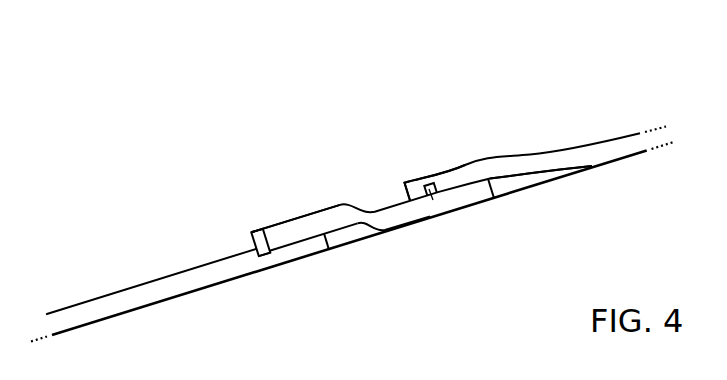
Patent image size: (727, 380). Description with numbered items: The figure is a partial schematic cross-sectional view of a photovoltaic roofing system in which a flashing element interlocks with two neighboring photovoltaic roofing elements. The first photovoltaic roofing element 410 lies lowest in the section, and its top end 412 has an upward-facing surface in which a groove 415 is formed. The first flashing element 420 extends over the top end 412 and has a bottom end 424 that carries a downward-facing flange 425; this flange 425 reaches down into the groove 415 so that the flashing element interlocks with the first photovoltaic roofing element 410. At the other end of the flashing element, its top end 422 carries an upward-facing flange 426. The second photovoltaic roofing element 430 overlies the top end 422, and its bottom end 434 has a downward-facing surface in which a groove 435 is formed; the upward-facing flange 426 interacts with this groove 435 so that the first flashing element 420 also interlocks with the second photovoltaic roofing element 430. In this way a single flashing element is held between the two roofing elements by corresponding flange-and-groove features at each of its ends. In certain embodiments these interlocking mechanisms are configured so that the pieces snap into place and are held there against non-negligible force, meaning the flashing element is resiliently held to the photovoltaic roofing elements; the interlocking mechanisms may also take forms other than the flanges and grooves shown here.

The first photovoltaic roofing element 410 is at (165, 220).
The top end 412 is at (320, 263).
The groove 415 is at (268, 255).
The first flashing element 420 is at (323, 157).
The top end 422 is at (492, 212).
The bottom end 424 is at (283, 207).
The downward-facing flange 425 is at (254, 236).
The upward-facing flange 426 is at (430, 189).
The second photovoltaic roofing element 430 is at (548, 102).
The bottom end 434 is at (430, 140).
The groove 435 is at (424, 186).